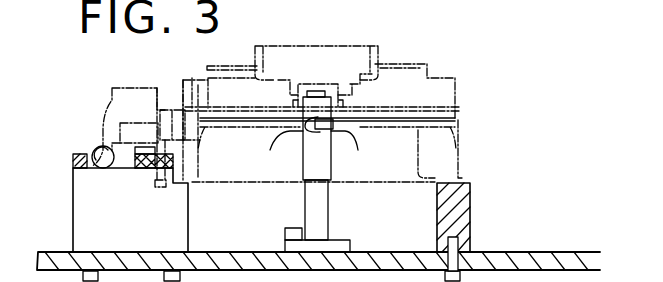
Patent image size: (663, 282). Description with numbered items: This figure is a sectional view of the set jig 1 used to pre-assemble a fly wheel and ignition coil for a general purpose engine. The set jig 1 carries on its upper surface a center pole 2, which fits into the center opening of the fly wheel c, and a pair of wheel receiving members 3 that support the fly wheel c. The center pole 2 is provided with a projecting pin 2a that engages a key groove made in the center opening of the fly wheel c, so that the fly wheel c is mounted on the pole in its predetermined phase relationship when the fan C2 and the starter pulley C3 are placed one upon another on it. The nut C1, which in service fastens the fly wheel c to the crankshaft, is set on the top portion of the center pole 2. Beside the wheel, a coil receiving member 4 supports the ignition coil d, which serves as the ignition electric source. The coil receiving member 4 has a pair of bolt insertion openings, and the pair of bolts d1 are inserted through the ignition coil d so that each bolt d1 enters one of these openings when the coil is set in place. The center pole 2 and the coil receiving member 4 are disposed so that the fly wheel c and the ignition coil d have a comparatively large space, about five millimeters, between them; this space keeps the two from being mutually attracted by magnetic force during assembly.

The set jig 1 is at (484, 236).
The center pole 2 is at (333, 92).
The pin 2a is at (340, 138).
The wheel receiving member 3 is at (470, 205).
The coil receiving member 4 is at (78, 208).
The fly wheel c is at (458, 120).
The nut C1 is at (300, 84).
The fan C2 is at (192, 76).
The starter pulley C3 is at (233, 63).
The ignition coil d is at (112, 96).
The bolt d1 is at (157, 80).